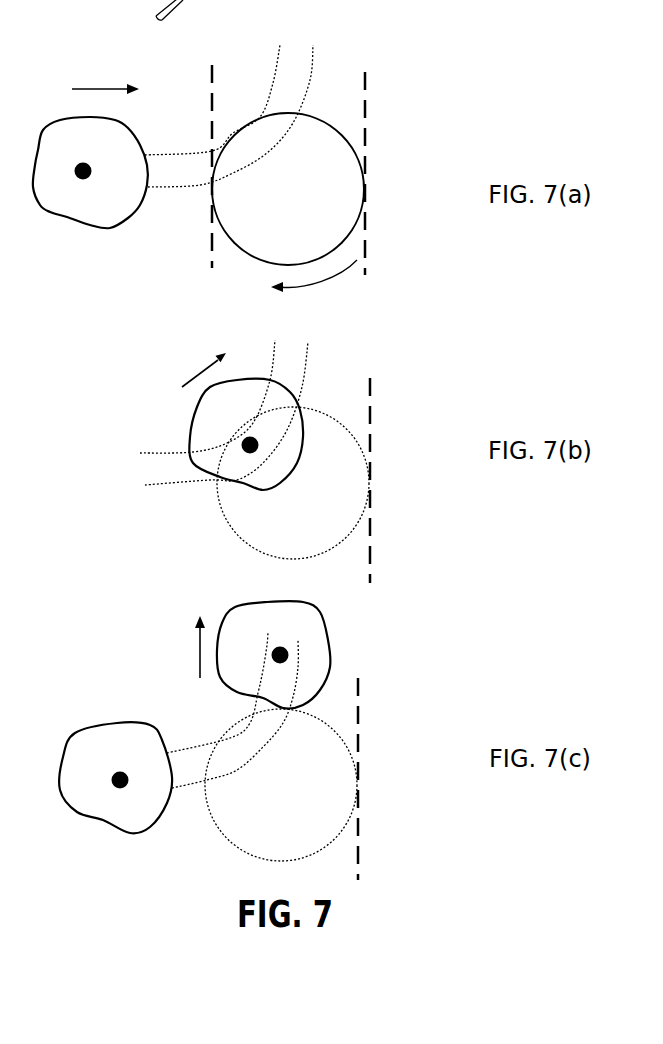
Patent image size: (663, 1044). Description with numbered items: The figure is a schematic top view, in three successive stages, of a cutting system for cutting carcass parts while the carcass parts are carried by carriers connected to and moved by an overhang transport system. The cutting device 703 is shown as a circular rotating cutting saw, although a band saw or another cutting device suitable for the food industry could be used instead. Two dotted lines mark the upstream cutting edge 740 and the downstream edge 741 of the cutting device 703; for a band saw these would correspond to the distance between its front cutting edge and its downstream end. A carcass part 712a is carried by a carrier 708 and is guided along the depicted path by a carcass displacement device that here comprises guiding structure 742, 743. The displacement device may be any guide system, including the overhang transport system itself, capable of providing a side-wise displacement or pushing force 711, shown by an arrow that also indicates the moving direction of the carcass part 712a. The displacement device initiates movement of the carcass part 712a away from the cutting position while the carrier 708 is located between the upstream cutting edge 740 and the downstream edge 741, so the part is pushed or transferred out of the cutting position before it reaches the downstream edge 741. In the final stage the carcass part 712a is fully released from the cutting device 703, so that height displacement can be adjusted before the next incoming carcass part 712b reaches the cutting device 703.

The cutting device 703 is at (320, 204).
The carrier 708 is at (92, 177).
The pushing force 711 is at (107, 87).
The carcass part 712a is at (96, 153).
The next incoming carcass part 712b is at (133, 758).
The upstream cutting edge 740 is at (213, 83).
The downstream edge 741 is at (367, 88).
The guiding structure 742 is at (173, 153).
The guiding structure 743 is at (180, 190).